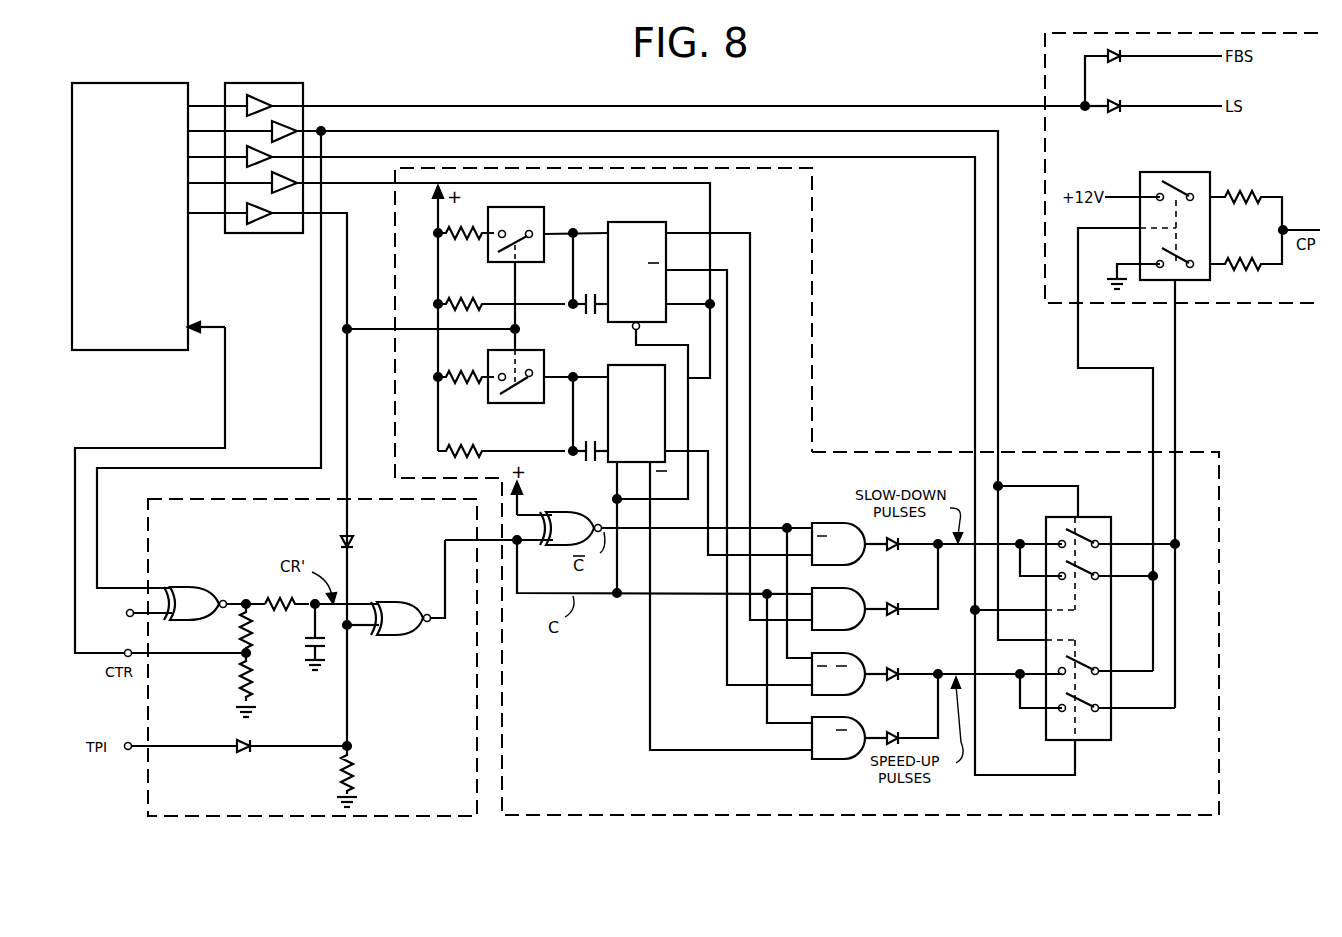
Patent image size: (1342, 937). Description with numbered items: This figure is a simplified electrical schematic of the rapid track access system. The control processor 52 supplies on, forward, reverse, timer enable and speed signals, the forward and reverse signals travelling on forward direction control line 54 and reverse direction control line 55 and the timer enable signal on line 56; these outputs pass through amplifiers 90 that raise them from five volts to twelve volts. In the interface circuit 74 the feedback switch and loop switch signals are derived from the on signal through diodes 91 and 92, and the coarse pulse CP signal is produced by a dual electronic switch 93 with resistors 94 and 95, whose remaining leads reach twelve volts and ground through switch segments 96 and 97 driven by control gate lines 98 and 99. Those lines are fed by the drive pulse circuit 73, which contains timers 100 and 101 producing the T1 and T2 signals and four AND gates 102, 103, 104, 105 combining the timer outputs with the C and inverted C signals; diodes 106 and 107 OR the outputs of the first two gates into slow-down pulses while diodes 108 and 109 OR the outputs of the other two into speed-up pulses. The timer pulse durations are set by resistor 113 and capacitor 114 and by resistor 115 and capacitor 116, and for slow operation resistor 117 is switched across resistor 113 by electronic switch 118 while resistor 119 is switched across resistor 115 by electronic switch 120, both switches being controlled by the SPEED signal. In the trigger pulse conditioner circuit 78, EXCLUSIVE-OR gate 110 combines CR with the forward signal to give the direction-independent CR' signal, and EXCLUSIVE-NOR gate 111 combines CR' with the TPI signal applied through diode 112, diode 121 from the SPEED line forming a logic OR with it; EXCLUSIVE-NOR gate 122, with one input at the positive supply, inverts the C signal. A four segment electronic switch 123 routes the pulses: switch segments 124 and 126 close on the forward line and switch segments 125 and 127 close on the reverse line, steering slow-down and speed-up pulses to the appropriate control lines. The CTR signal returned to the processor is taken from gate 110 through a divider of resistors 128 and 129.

The control processor 52 is at (129, 350).
The forward direction control line 54 is at (360, 130).
The reverse direction control line 55 is at (402, 157).
The timer enable line 56 is at (423, 182).
The drive pulse circuit 73 is at (1220, 542).
The interface circuit 74 is at (1265, 306).
The trigger pulse conditioner circuit 78 is at (380, 818).
The amplifiers 90 is at (248, 83).
The diode 91 is at (1121, 62).
The diode 92 is at (1120, 112).
The dual electronic switch 93 is at (1145, 172).
The resistor 94 is at (1245, 191).
The resistor 95 is at (1245, 258).
The switch segment 96 is at (1174, 172).
The switch segment 97 is at (1185, 262).
The control gate line 98 is at (1077, 329).
The control gate line 99 is at (1177, 384).
The timer 100 is at (612, 222).
The timer 101 is at (640, 365).
The AND gate 102 is at (821, 522).
The AND gate 103 is at (838, 588).
The AND gate 104 is at (838, 653).
The AND gate 105 is at (838, 717).
The diode 106 is at (897, 552).
The diode 107 is at (897, 616).
The diode 108 is at (900, 667).
The diode 109 is at (895, 731).
The EXCLUSIVE-OR gate 110 is at (193, 587).
The EXCLUSIVE-NOR gate 111 is at (398, 634).
The diode 112 is at (242, 753).
The resistor 113 is at (464, 300).
The capacitor 114 is at (586, 317).
The resistor 115 is at (455, 446).
The capacitor 116 is at (580, 466).
The second resistor 117 is at (456, 240).
The electronic switch 118 is at (546, 214).
The resistor 119 is at (478, 372).
The electronic switch 120 is at (547, 360).
The diode 121 is at (353, 541).
The EXCLUSIVE-NOR gate 122 is at (555, 541).
The four segment electronic switch 123 is at (1098, 740).
The switch segment 124 is at (1085, 531).
The switch segment 125 is at (1085, 583).
The switch segment 126 is at (1085, 677).
The switch segment 127 is at (1085, 714).
The resistor 128 is at (252, 624).
The resistor 129 is at (242, 680).